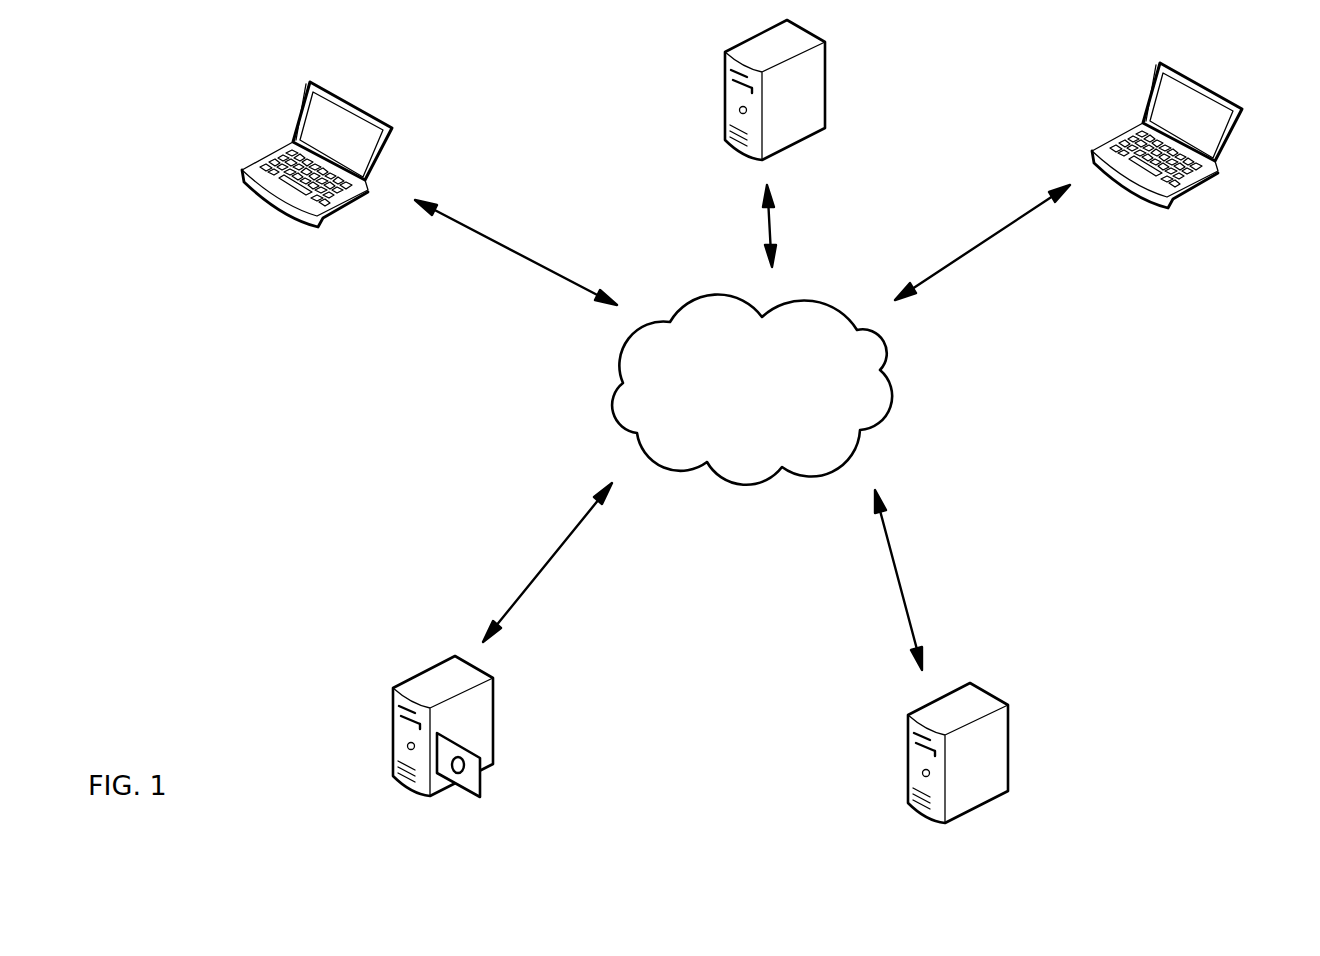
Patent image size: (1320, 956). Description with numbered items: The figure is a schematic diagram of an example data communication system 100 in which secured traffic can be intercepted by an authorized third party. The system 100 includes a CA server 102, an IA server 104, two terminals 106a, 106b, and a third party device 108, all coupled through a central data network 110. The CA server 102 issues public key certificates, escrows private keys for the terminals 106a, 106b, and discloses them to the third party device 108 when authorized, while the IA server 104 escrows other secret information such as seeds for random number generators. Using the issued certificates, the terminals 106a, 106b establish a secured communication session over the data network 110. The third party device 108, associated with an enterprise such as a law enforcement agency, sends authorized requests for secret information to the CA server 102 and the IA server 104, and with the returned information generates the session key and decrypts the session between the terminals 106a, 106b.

The data communication system 100 is at (1185, 683).
The CA server 102 is at (477, 722).
The IA server 104 is at (1007, 700).
The terminal 106a is at (297, 113).
The terminal 106b is at (1157, 83).
The third party device 108 is at (723, 52).
The data network 110 is at (752, 390).